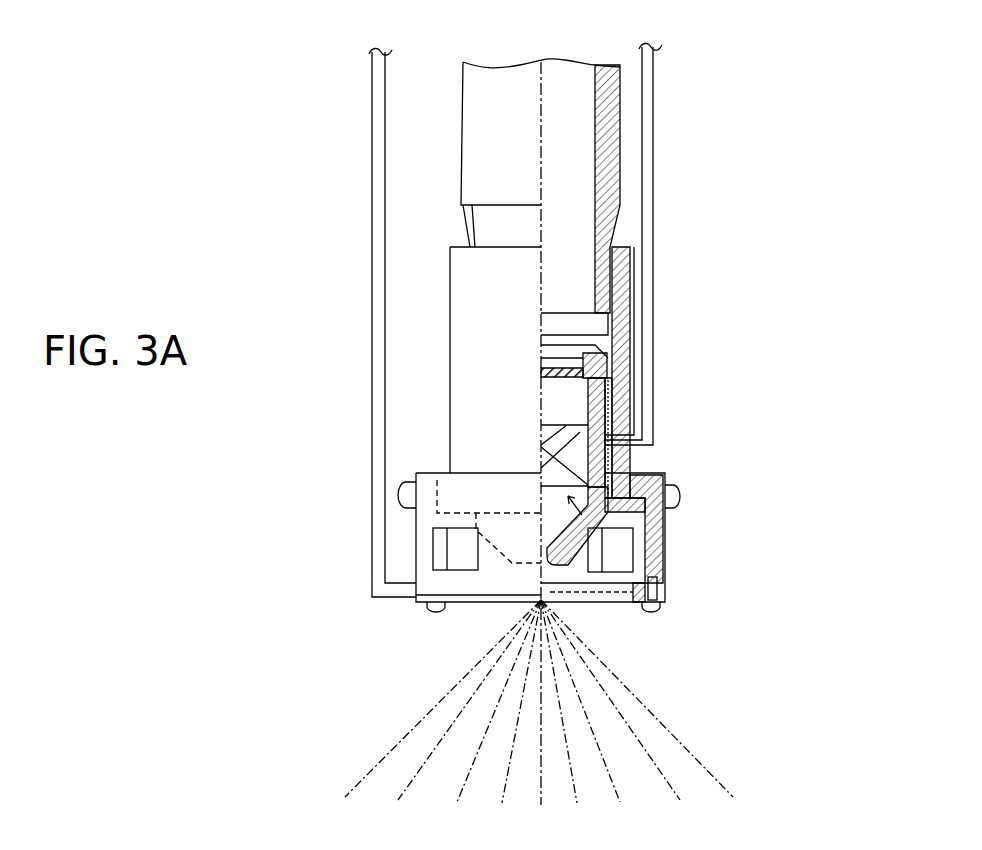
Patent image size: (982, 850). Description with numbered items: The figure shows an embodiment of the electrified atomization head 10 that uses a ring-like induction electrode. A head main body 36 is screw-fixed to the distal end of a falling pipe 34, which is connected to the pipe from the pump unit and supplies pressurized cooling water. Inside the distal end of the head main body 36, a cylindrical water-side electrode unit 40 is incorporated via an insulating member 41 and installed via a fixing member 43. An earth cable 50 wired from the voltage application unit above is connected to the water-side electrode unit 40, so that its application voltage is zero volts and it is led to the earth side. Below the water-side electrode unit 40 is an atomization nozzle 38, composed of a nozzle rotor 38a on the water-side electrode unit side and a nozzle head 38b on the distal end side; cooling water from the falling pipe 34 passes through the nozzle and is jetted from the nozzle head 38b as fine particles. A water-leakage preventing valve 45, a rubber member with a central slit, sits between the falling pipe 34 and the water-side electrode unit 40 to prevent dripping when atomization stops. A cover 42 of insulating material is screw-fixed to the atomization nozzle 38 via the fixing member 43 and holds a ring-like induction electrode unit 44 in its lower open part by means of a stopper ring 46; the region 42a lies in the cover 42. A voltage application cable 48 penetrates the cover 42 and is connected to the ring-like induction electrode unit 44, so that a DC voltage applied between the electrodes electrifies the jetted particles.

The electrified atomization head 10 is at (320, 120).
The falling pipe 34 is at (502, 88).
The head main body 36 is at (472, 334).
The atomization nozzle 38 is at (608, 538).
The nozzle rotor 38a is at (636, 454).
The nozzle head 38b is at (647, 564).
The water-side electrode unit 40 is at (613, 390).
The insulating member 41 is at (625, 421).
The cover 42 is at (430, 520).
The opening of base housing 42a is at (445, 556).
The fixing member 43 is at (668, 515).
The ring-like induction electrode unit 44 is at (608, 601).
The water-leakage preventing valve 45 is at (630, 358).
The stopper ring 46 is at (467, 597).
The voltage application cable 48 is at (372, 218).
The earth cable 50 is at (656, 125).